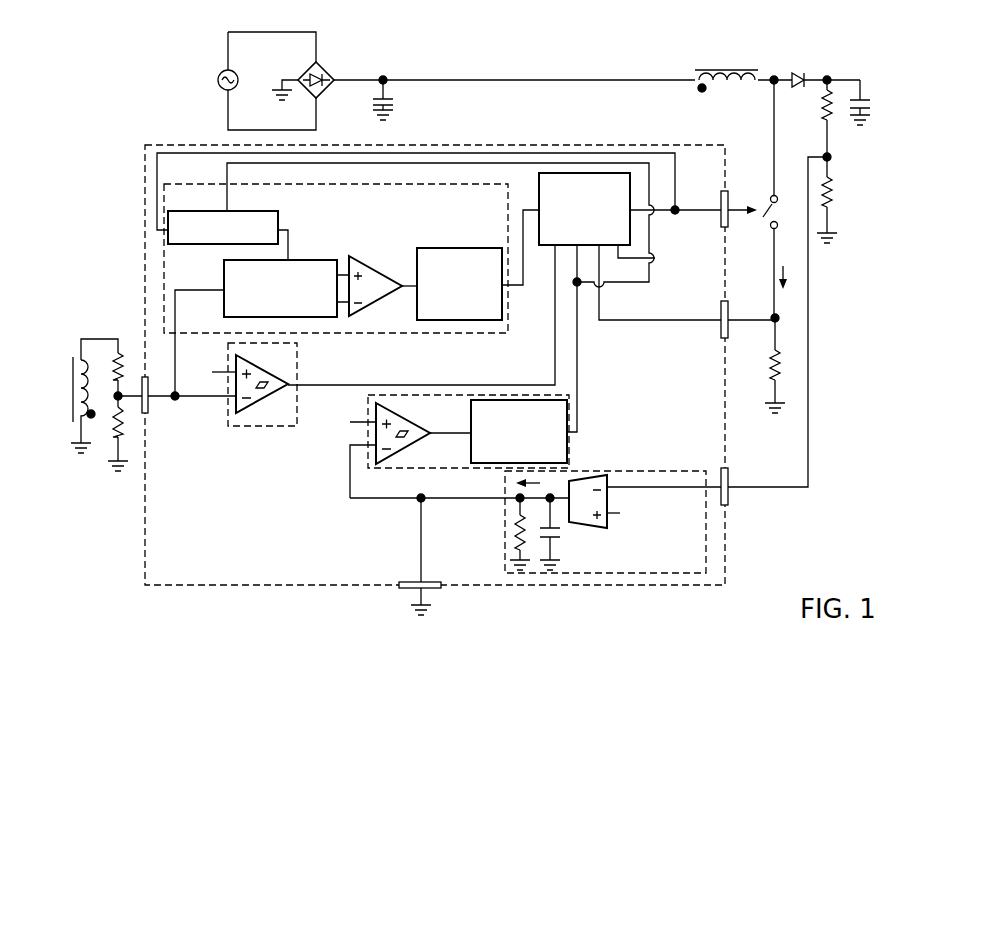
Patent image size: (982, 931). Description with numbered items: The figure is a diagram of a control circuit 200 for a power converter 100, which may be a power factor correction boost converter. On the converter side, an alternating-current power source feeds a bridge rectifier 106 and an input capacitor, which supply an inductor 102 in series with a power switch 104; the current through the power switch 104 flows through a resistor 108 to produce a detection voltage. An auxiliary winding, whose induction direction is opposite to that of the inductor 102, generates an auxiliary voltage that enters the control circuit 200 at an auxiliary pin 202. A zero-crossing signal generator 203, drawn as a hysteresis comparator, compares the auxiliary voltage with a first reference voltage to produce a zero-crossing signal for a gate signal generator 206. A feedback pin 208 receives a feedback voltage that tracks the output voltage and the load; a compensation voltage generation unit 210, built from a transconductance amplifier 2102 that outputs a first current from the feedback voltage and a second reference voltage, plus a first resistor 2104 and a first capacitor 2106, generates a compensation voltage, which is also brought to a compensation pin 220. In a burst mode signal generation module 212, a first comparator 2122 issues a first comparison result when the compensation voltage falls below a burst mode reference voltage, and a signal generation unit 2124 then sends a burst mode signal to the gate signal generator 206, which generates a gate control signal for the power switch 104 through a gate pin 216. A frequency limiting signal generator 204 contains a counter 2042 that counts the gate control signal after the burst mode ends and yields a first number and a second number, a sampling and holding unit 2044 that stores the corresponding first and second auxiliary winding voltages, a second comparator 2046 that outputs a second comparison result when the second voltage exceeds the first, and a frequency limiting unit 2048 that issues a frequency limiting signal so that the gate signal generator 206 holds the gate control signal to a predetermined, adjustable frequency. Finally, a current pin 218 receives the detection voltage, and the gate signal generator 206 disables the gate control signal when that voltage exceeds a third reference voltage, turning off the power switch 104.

The power converter 100 is at (898, 70).
The inductor 102 is at (729, 86).
The power switch 104 is at (779, 210).
The bridge rectifier 106 is at (332, 66).
The resistor 108 is at (771, 365).
The control circuit 200 is at (727, 530).
The auxiliary pin 202 is at (150, 407).
The zero-crossing signal generator 203 is at (272, 426).
The frequency limiting signal generator 204 is at (164, 251).
The counter 2042 is at (199, 211).
The sampling and holding unit 2044 is at (300, 260).
The second comparator 2046 is at (371, 272).
The frequency limiting unit 2048 is at (455, 248).
The gate signal generator 206 is at (539, 180).
The feedback pin 208 is at (728, 479).
The compensation voltage generation unit 210 is at (657, 471).
The transconductance amplifier 2102 is at (588, 477).
The first resistor 2104 is at (513, 530).
The first capacitor 2106 is at (558, 532).
The burst mode signal generation module 212 is at (462, 395).
The first comparator 2122 is at (395, 403).
The signal generation unit 2124 is at (520, 400).
The gate pin 216 is at (729, 196).
The current pin 218 is at (721, 332).
The compensation pin 220 is at (405, 590).